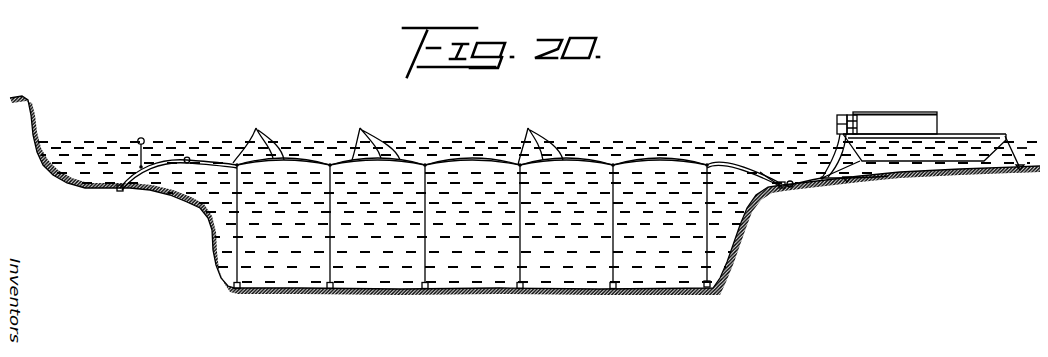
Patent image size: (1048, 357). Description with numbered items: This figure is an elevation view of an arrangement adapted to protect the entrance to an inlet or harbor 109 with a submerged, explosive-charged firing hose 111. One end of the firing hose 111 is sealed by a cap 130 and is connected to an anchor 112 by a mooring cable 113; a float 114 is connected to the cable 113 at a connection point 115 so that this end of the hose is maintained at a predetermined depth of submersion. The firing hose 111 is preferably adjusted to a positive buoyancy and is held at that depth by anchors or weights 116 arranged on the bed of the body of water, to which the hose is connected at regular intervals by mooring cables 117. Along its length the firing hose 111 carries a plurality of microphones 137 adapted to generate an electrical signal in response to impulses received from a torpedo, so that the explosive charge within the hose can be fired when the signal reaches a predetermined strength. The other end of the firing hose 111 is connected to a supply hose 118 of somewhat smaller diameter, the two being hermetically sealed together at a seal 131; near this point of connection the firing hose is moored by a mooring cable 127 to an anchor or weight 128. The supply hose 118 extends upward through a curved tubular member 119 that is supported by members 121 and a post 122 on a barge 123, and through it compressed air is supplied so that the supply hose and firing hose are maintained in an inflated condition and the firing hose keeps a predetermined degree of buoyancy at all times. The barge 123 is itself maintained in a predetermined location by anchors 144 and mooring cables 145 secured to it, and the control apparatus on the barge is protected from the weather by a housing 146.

The inlet or harbor 109 is at (450, 275).
The firing hose 111 is at (301, 160).
The anchor 112 is at (120, 191).
The mooring cable 113 is at (110, 168).
The float 114 is at (144, 140).
The connection point of float to cable 115 is at (127, 170).
The anchors or weights 116 is at (237, 289).
The mooring cables 117 is at (237, 224).
The supply hose 118 is at (790, 166).
The curved tubular member 119 is at (835, 133).
The members 121 is at (837, 120).
The post 122 is at (847, 115).
The barge 123 is at (960, 135).
The mooring cable 127 is at (779, 191).
The anchor or weight 128 is at (801, 183).
The cap 130 is at (190, 158).
The hermetic seal 131 is at (757, 160).
The microphones 137 is at (398, 136).
The anchors 144 is at (847, 182).
The mooring cables 145 is at (886, 176).
The housing 146 is at (895, 114).